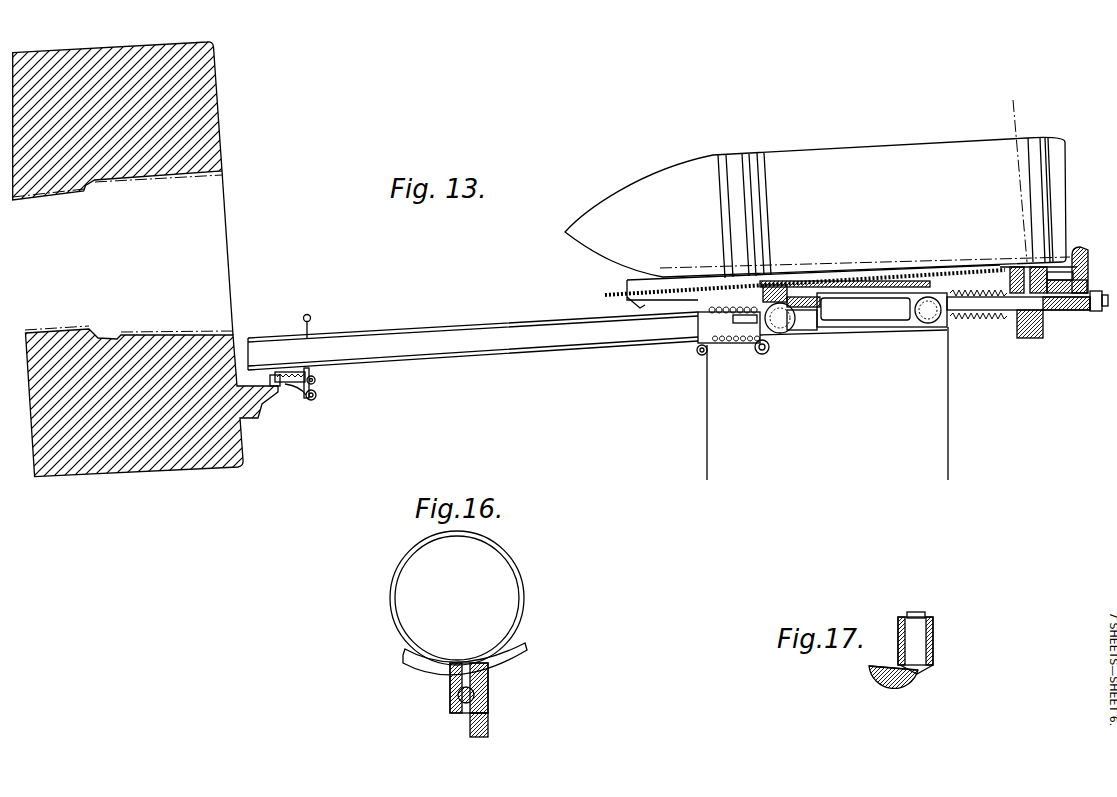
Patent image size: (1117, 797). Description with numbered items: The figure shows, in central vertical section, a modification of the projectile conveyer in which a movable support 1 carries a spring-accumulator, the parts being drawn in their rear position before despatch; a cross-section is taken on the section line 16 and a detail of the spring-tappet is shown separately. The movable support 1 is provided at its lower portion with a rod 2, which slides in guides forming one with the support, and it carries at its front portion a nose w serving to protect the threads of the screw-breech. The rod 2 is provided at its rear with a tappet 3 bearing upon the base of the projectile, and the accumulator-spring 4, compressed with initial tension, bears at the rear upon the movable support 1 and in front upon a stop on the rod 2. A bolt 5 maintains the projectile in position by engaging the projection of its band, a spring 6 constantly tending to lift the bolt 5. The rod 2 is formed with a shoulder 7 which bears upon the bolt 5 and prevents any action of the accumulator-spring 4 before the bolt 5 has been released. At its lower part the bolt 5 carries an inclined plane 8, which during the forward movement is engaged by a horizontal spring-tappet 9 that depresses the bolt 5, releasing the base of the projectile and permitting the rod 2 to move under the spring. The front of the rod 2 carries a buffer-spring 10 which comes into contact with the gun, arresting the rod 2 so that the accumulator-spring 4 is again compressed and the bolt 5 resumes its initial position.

In FIG. 13, the movable support 1 is at (860, 287).
In FIG. 16, the movable support 1 is at (487, 708).
In FIG. 13, the rod 2 is at (862, 312).
In FIG. 16, the rod 2 is at (453, 712).
In FIG. 13, the tappet 3 is at (1079, 266).
In FIG. 13, the accumulator-spring 4 is at (957, 318).
In FIG. 13, the bolt 5 is at (1012, 275).
In FIG. 16, the bolt 5 is at (458, 668).
In FIG. 17, the bolt 5 is at (906, 684).
In FIG. 13, the spring 6 is at (1031, 280).
In FIG. 16, the spring 6 is at (474, 668).
In FIG. 13, the shoulder 7 is at (1050, 312).
In FIG. 13, the inclined plane 8 is at (1030, 330).
In FIG. 16, the inclined plane 8 is at (470, 729).
In FIG. 17, the inclined plane 8 is at (882, 670).
In FIG. 13, the spring-tappet 9 is at (767, 349).
In FIG. 17, the spring-tappet 9 is at (918, 640).
In FIG. 13, the buffer-spring 10 is at (738, 330).
In FIG. 13, the section line 16 is at (1038, 384).
In FIG. 13, the nose w is at (605, 294).